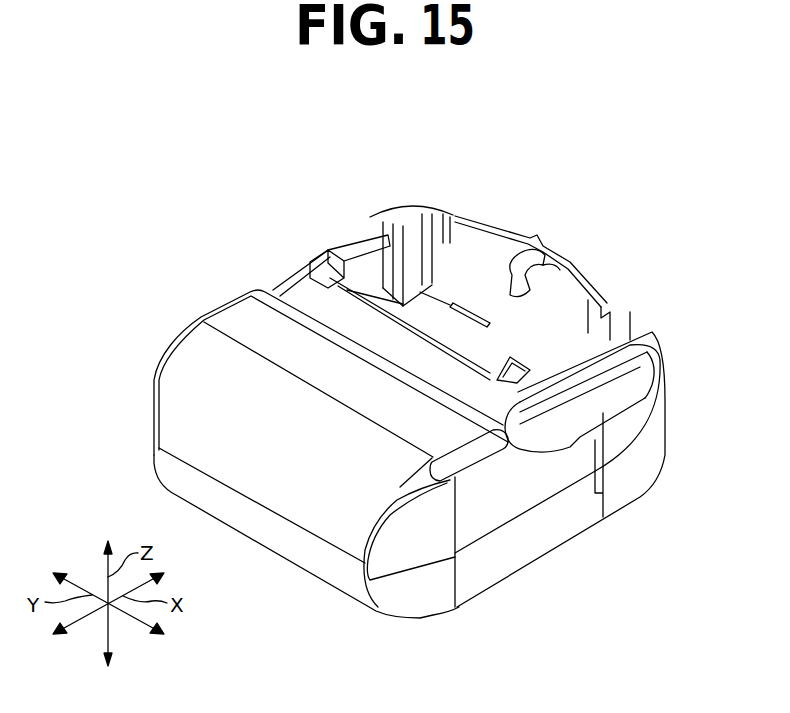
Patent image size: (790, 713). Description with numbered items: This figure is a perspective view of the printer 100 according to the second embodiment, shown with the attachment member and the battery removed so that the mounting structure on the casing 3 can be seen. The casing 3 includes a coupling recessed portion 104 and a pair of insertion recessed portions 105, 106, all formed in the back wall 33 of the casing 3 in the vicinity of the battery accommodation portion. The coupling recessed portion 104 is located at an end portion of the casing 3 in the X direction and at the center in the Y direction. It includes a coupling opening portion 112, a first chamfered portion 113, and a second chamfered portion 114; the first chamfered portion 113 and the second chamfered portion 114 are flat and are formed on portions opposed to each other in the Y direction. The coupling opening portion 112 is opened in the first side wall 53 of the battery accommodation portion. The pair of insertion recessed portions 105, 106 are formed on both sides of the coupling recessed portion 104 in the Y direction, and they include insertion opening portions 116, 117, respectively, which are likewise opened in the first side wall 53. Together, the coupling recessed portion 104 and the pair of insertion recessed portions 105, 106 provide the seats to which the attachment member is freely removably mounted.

The printer 100 is at (200, 166).
The casing 3 is at (184, 263).
The back wall 33 is at (365, 330).
The first chamfered portion 113 is at (345, 243).
The insertion opening portion 116 is at (413, 240).
The insertion recessed portion 105 is at (452, 237).
The coupling recessed portion 104 is at (541, 239).
The first side wall 53 is at (570, 270).
The insertion recessed portion 106 is at (607, 302).
The insertion opening portion 117 is at (593, 337).
The second chamfered portion 114 is at (522, 292).
The coupling opening portion 112 is at (510, 295).